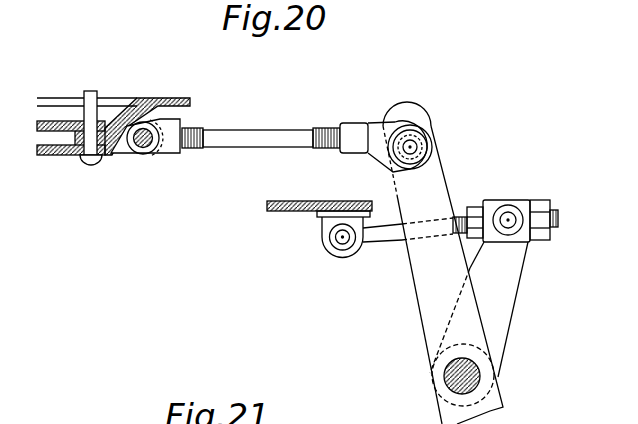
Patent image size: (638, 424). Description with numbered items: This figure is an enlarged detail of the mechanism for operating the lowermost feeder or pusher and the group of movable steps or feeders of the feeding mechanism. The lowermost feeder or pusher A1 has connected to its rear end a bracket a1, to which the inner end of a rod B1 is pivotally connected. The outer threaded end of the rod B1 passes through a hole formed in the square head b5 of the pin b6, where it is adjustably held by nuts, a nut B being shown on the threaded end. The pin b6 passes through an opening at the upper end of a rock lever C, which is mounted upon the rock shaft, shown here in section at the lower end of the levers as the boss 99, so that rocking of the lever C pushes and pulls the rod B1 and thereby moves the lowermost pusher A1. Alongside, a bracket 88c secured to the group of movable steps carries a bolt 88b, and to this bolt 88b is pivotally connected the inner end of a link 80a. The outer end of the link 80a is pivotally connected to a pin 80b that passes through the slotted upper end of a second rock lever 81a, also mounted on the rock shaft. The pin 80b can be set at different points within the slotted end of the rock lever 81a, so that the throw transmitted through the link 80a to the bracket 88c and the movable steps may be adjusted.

The link 80a is at (259, 135).
The pin 80b is at (429, 143).
The rock lever 81a is at (402, 184).
The bolt 88b is at (142, 153).
The bracket 88c is at (118, 148).
The lowermost feeder or pusher A1 is at (278, 212).
The bracket a1 is at (329, 230).
The rod B1 is at (383, 238).
The pivot bolt B is at (558, 217).
The square head b5 is at (523, 203).
The pin b6 is at (508, 218).
The rock lever C is at (507, 287).
The shaft boss 99 is at (480, 375).